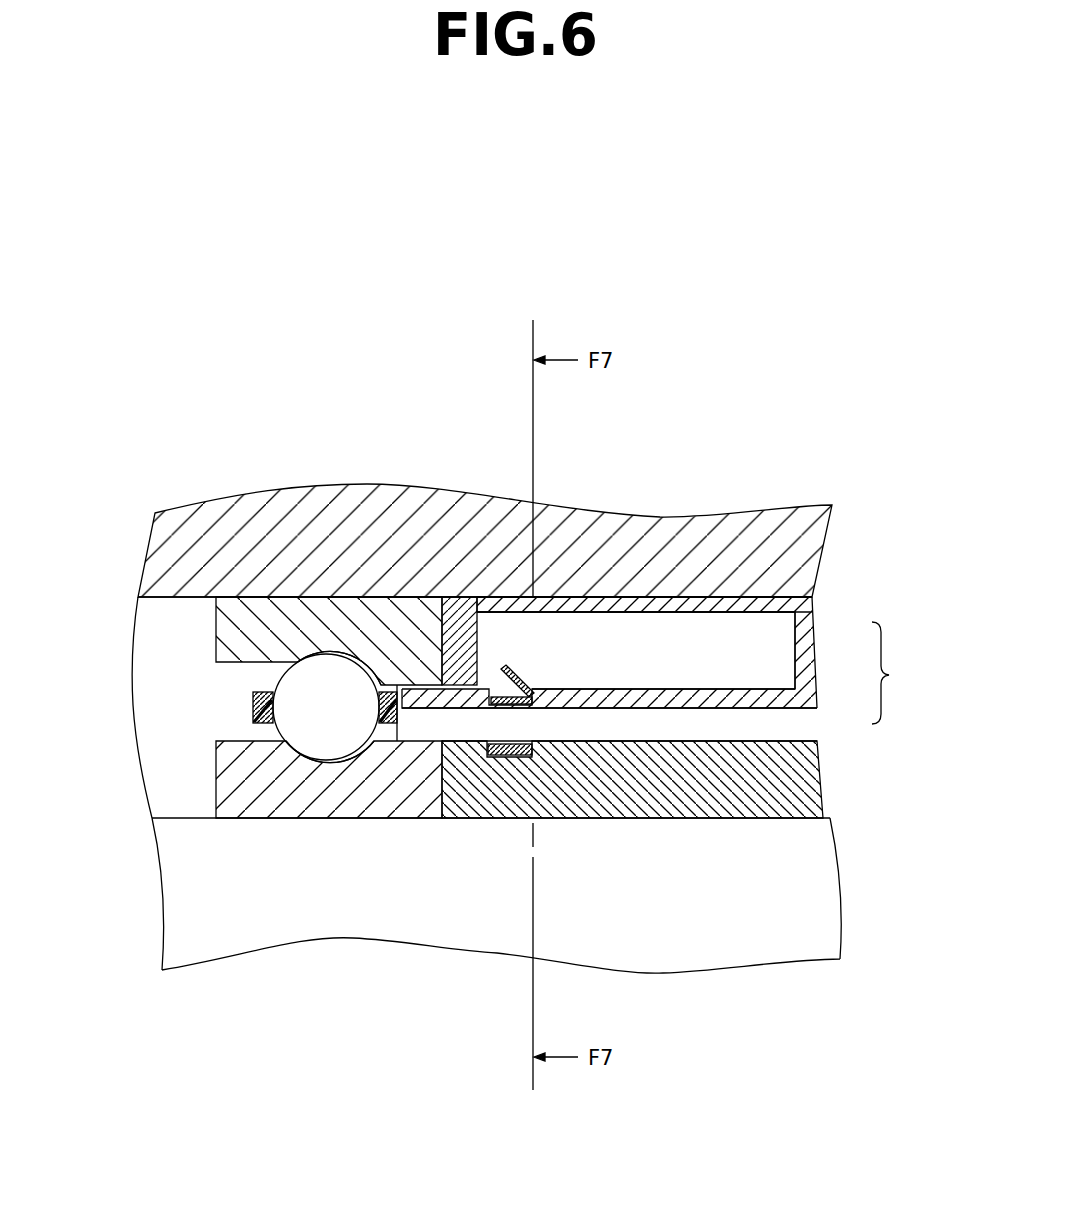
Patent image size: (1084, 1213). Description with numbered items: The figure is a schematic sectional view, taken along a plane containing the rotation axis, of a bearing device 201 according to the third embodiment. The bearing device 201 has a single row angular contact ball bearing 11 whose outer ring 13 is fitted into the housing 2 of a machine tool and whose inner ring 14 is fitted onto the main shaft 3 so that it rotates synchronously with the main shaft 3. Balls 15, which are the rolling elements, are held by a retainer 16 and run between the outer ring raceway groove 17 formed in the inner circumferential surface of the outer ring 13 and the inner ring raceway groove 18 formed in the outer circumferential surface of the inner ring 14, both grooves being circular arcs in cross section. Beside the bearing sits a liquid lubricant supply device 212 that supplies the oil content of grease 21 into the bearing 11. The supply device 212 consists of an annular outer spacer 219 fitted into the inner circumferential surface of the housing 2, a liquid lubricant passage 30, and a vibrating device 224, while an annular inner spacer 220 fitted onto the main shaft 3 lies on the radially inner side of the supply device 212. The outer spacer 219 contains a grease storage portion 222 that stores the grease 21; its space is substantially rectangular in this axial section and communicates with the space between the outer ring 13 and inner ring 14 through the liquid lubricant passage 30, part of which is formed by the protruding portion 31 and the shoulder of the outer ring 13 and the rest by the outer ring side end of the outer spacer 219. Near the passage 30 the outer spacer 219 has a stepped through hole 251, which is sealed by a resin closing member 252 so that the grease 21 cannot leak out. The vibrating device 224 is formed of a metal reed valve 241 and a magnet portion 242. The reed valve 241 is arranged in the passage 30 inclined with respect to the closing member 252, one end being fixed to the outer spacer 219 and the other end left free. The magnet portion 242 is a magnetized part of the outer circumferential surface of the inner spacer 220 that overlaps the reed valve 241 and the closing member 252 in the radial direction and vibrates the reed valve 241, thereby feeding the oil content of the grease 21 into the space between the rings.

The housing 2 is at (195, 537).
The main shaft 3 is at (750, 868).
The single row angular contact ball bearing 11 is at (312, 588).
The outer ring 13 is at (254, 606).
The inner ring 14 is at (235, 798).
The balls 15 is at (348, 723).
The retainer 16 is at (392, 697).
The outer ring raceway groove 17 is at (325, 690).
The inner ring raceway groove 18 is at (329, 723).
The grease 21 is at (597, 640).
The liquid lubricant passage 30 is at (427, 685).
The protruding portion 31 is at (420, 698).
The bearing device 201 is at (172, 680).
The liquid lubricant supply device 212 is at (750, 586).
The outer spacer 219 is at (637, 604).
The inner spacer 220 is at (667, 778).
The grease storage portion 222 is at (683, 613).
The vibrating device 224 is at (904, 673).
The reed valve 241 is at (513, 676).
The magnet portion 242 is at (531, 738).
The stepped through hole 251 is at (507, 755).
The closing member 252 is at (507, 700).